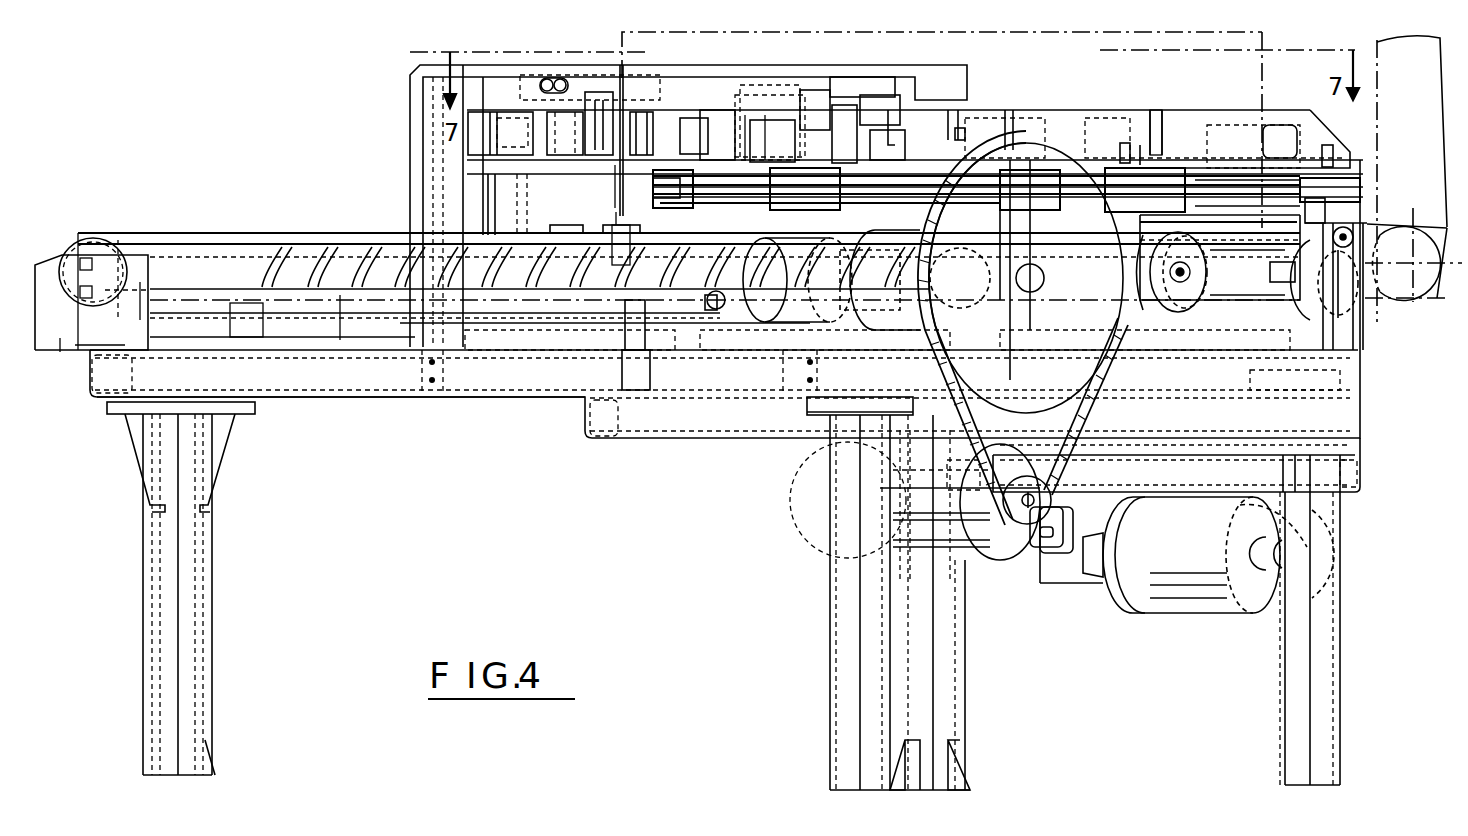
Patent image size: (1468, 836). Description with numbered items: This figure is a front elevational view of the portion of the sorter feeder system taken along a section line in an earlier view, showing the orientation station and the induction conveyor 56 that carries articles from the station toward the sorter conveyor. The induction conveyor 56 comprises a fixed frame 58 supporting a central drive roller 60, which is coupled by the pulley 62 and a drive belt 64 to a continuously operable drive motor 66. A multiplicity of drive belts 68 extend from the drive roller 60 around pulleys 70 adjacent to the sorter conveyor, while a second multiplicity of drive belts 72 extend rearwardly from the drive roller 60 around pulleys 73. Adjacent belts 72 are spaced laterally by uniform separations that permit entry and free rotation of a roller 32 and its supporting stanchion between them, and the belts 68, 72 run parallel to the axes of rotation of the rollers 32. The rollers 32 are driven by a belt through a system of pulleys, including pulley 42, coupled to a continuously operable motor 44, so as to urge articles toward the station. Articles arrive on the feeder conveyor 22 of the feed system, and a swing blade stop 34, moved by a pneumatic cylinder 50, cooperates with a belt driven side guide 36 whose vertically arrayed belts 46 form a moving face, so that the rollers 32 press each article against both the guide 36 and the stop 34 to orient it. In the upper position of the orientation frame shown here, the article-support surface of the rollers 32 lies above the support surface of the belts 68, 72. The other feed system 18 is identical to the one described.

The feed system 18 is at (1407, 242).
The feeder conveyor 22 is at (1318, 228).
The rollers 32 is at (1167, 225).
The swing blade stop 34 is at (636, 184).
The belt driven side guide 36 is at (1167, 100).
The pulley 42 is at (1338, 307).
The motor 44 is at (1205, 542).
The belts 46 is at (1240, 168).
The pneumatic cylinder 50 is at (767, 112).
The induction conveyor 56 is at (304, 210).
The fixed frame 58 is at (362, 380).
The central drive roller 60 is at (556, 268).
The pulley 62 is at (1038, 147).
The drive belt 64 is at (1055, 152).
The drive motor 66 is at (989, 535).
The drive belts 68 is at (336, 238).
The pulleys 70 is at (86, 262).
The drive belts 72 is at (612, 255).
The pulleys 73 is at (1192, 300).